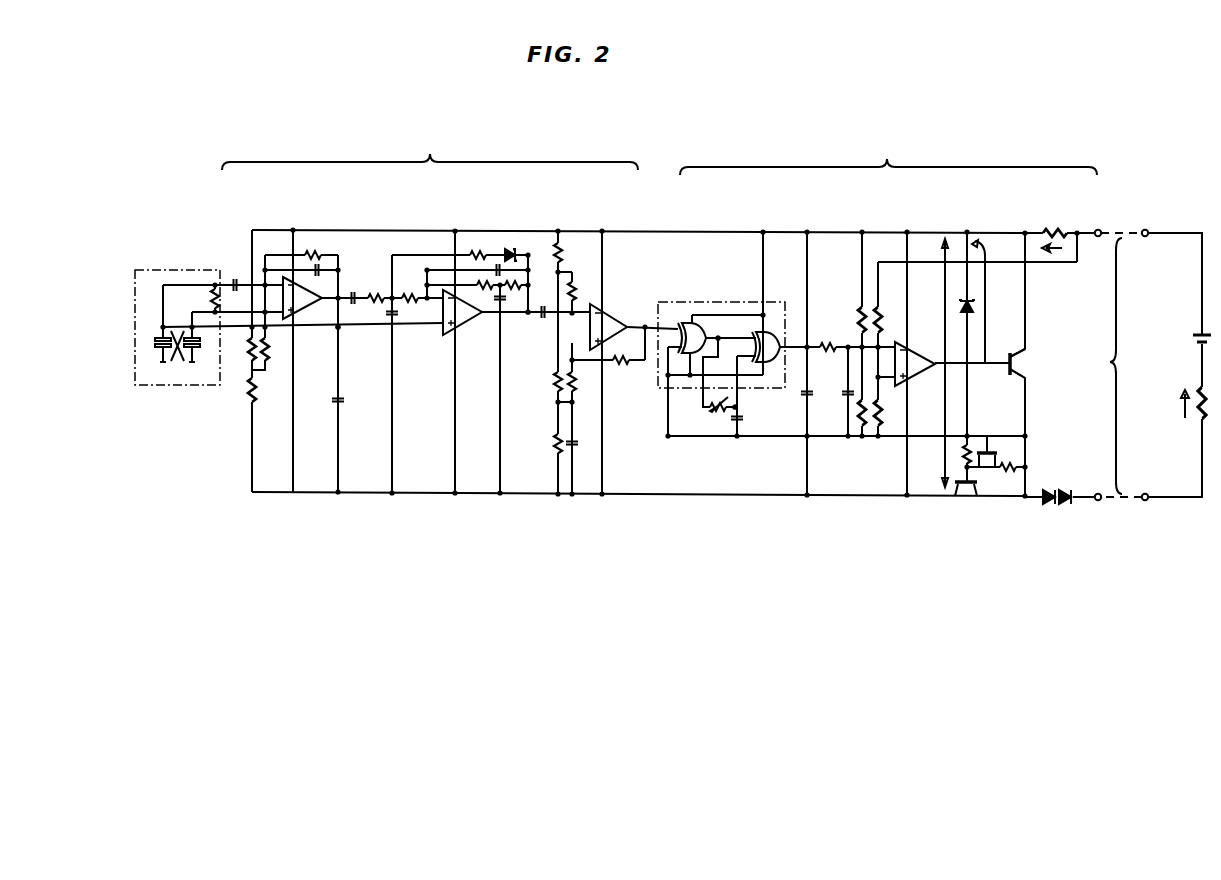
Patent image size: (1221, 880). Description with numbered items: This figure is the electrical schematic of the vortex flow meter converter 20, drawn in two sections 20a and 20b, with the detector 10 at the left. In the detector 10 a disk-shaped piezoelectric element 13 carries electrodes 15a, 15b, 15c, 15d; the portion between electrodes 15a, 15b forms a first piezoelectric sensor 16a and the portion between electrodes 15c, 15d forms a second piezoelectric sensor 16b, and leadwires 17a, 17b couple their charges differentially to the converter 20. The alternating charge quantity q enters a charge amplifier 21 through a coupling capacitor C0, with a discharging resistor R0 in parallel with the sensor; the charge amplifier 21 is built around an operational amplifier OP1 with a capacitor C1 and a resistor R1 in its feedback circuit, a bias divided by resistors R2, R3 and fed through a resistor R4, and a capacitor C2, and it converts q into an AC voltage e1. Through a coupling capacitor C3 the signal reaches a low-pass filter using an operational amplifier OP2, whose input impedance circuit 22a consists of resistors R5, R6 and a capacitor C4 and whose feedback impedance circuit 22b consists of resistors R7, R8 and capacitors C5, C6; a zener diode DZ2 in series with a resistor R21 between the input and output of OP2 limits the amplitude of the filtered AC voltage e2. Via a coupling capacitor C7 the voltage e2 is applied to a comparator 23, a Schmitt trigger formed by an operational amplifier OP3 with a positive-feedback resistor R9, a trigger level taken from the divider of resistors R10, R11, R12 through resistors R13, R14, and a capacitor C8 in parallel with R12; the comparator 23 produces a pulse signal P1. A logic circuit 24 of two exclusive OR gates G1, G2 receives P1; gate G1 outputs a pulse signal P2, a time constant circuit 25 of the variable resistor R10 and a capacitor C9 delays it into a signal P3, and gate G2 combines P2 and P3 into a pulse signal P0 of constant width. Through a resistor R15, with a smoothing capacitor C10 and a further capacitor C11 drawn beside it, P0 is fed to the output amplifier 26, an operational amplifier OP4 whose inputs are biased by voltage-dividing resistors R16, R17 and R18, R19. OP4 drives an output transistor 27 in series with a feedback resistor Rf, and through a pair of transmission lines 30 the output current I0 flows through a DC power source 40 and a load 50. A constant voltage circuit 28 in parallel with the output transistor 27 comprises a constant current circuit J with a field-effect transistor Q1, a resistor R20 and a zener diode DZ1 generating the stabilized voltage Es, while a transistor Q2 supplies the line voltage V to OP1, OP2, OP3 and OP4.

The detector 10 is at (150, 270).
The piezoelectric element 13 is at (188, 374).
The electrode 15a is at (162, 336).
The electrode 15b is at (157, 346).
The electrode 15c is at (200, 340).
The electrode 15d is at (196, 345).
The first piezoelectric sensor 16a is at (163, 364).
The second piezoelectric sensor 16b is at (193, 364).
The leadwire 17a is at (183, 285).
The leadwire 17b is at (194, 312).
The alternating charge quantity q is at (216, 283).
The converter 20 is at (638, 303).
The detecting circuit section 20a is at (430, 150).
The output circuit section 20b is at (888, 154).
The charge amplifier 21 is at (341, 256).
The input impedance circuit 22a is at (446, 335).
The feedback impedance circuit 22b is at (557, 360).
The comparator 23 is at (630, 316).
The logic circuit 24 is at (746, 302).
The time constant circuit 25 is at (722, 432).
The output amplifier 26 is at (912, 345).
The output transistor 27 is at (1030, 368).
The constant voltage circuit 28 is at (998, 494).
The transmission lines 30 is at (1113, 364).
The DC power source 40 is at (1198, 335).
The load 50 is at (1198, 390).
The discharging resistor R0 is at (218, 292).
The resistor R1 is at (313, 252).
The resistor R2 is at (254, 404).
The resistor R3 is at (266, 362).
The resistor R4 is at (254, 362).
The resistor R5 is at (376, 297).
The resistor R6 is at (410, 295).
The resistor R7 is at (484, 282).
The resistor R8 is at (560, 243).
The resistor R9 is at (627, 364).
The resistor R10 is at (517, 283).
The resistor R11 is at (557, 386).
The resistor R12 is at (557, 450).
The resistor R13 is at (578, 288).
The resistor R14 is at (576, 380).
The resistor R15 is at (829, 344).
The resistor R16 is at (861, 313).
The resistor R17 is at (861, 420).
The resistor R18 is at (877, 312).
The resistor R19 is at (879, 424).
The resistor R20 is at (976, 446).
The resistor R21 is at (477, 252).
The feedback resistor Rf is at (1045, 231).
The coupling capacitor C0 is at (237, 280).
The capacitor C1 is at (321, 268).
The capacitor C2 is at (342, 401).
The coupling capacitor C3 is at (356, 304).
The capacitor C4 is at (395, 318).
The capacitor C5 is at (499, 264).
The capacitor C6 is at (497, 305).
The coupling capacitor C7 is at (543, 318).
The capacitor C8 is at (579, 443).
The capacitor C9 is at (740, 424).
The capacitor C10 is at (809, 400).
The capacitor C11 is at (848, 400).
The operational amplifier OP1 is at (300, 292).
The operational amplifier OP2 is at (455, 322).
The operational amplifier OP3 is at (614, 312).
The operational amplifier OP4 is at (922, 378).
The zener diode DZ1 is at (965, 302).
The zener diode DZ2 is at (512, 252).
The exclusive OR gate G1 is at (690, 320).
The exclusive OR gate G2 is at (762, 333).
The pulse signal P0 is at (796, 352).
The pulse signal P1 is at (651, 326).
The pulse signal P2 is at (719, 335).
The signal P3 is at (744, 413).
The field-effect transistor Q1 is at (990, 470).
The transistor Q2 is at (966, 500).
The AC voltage e1 is at (341, 329).
The AC voltage e2 is at (529, 316).
The stabilized voltage Es is at (986, 301).
The line voltage V is at (944, 363).
The output current I0 is at (1063, 251).
The constant current circuit J is at (1003, 460).